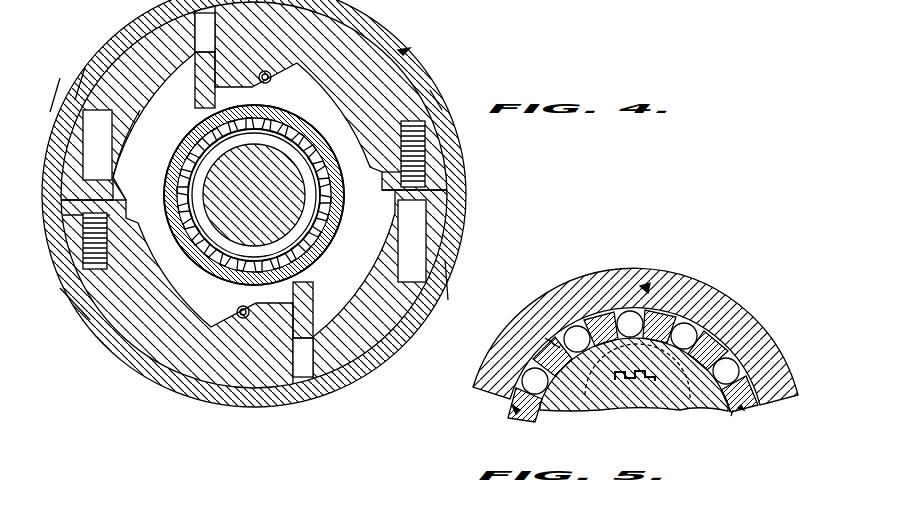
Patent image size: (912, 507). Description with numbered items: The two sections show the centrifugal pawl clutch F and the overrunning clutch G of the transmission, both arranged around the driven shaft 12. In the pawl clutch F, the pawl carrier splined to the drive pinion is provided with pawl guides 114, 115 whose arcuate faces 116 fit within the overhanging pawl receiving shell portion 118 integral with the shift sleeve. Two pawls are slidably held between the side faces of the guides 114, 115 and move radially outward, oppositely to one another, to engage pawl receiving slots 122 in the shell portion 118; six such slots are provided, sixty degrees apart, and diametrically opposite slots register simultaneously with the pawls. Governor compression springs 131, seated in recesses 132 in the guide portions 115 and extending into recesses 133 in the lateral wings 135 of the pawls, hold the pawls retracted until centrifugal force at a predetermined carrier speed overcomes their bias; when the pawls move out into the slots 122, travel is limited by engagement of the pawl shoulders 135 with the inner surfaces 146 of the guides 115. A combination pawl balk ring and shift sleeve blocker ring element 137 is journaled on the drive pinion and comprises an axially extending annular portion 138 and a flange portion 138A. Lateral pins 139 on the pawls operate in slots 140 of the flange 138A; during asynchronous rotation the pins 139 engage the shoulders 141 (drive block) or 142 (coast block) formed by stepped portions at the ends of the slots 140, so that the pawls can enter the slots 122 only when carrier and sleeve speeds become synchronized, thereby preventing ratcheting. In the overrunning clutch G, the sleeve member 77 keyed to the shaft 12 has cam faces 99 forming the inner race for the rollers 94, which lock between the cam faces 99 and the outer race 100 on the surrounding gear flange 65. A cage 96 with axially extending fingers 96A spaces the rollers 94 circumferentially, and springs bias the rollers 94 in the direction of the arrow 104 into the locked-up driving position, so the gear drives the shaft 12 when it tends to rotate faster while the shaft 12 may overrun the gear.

In FIG. 4, the driven shaft 12 is at (262, 184).
In FIG. 4, the pawl guide 114 is at (128, 84).
In FIG. 4, the pawl guide 115 is at (395, 102).
In FIG. 4, the arcuate face 116 is at (440, 160).
In FIG. 4, the pawl receiving shell portion 118 is at (400, 52).
In FIG. 4, the pawl receiving slot 122 is at (80, 60).
In FIG. 4, the governor compression spring 131 is at (428, 130).
In FIG. 4, the recess 132 is at (430, 105).
In FIG. 4, the recess 133 is at (398, 192).
In FIG. 4, the lateral wing 135 is at (255, 192).
In FIG. 4, the combination pawl balk ring and shift sleeve blocker ring element 137 is at (262, 78).
In FIG. 4, the axially extending annular portion 138 is at (428, 189).
In FIG. 4, the flange portion 138A is at (150, 125).
In FIG. 4, the pin 139 is at (265, 70).
In FIG. 4, the slot 140 is at (250, 128).
In FIG. 4, the shoulder 141 is at (240, 90).
In FIG. 4, the shoulder 142 is at (248, 100).
In FIG. 4, the inner surface 146 is at (426, 176).
In FIG. 4, the centrifugal clutch F is at (130, 21).
In FIG. 5, the outer race ring 65 is at (752, 327).
In FIG. 5, the sleeve member 77 is at (562, 410).
In FIG. 5, the roller 94 is at (625, 318).
In FIG. 5, the cage or carrier 96 is at (734, 416).
In FIG. 5, the axially extending finger 96A is at (740, 410).
In FIG. 5, the cam face 99 is at (724, 413).
In FIG. 5, the outer race 100 is at (548, 340).
In FIG. 5, the arrow 104 is at (646, 287).
In FIG. 5, the overrunning clutch G is at (515, 410).